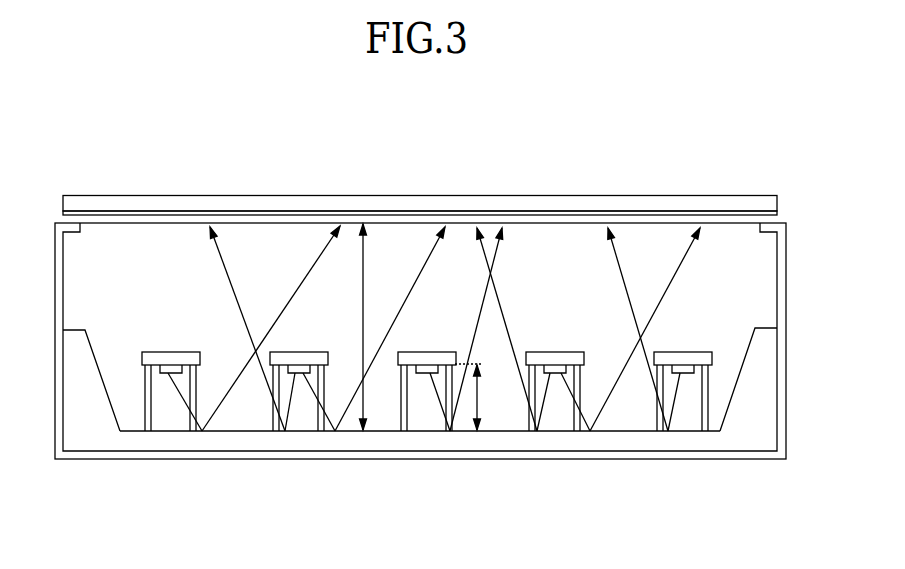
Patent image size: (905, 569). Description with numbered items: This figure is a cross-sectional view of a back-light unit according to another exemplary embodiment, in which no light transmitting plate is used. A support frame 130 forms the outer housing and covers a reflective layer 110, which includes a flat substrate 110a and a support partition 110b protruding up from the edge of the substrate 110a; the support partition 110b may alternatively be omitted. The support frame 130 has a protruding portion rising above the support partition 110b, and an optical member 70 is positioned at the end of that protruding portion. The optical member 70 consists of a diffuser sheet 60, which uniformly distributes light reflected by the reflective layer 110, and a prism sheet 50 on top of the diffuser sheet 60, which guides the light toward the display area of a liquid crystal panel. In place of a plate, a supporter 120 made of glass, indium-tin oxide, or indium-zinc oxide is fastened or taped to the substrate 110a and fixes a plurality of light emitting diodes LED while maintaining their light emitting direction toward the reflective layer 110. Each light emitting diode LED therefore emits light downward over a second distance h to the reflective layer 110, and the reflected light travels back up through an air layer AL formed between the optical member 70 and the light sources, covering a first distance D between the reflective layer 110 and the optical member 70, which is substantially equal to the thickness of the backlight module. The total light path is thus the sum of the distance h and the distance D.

The prism sheet 50 is at (173, 202).
The diffuser sheet 60 is at (210, 217).
The optical member 70 is at (420, 162).
The reflective layer 110 is at (420, 435).
The substrate 110a is at (683, 438).
The support partition 110b is at (753, 423).
The supporter 120 is at (427, 366).
The support frame 130 is at (542, 452).
The light emitting diode LED is at (318, 352).
The air layer AL is at (563, 252).
The first distance D is at (365, 268).
The second distance h is at (480, 398).
The element light is at (313, 265).